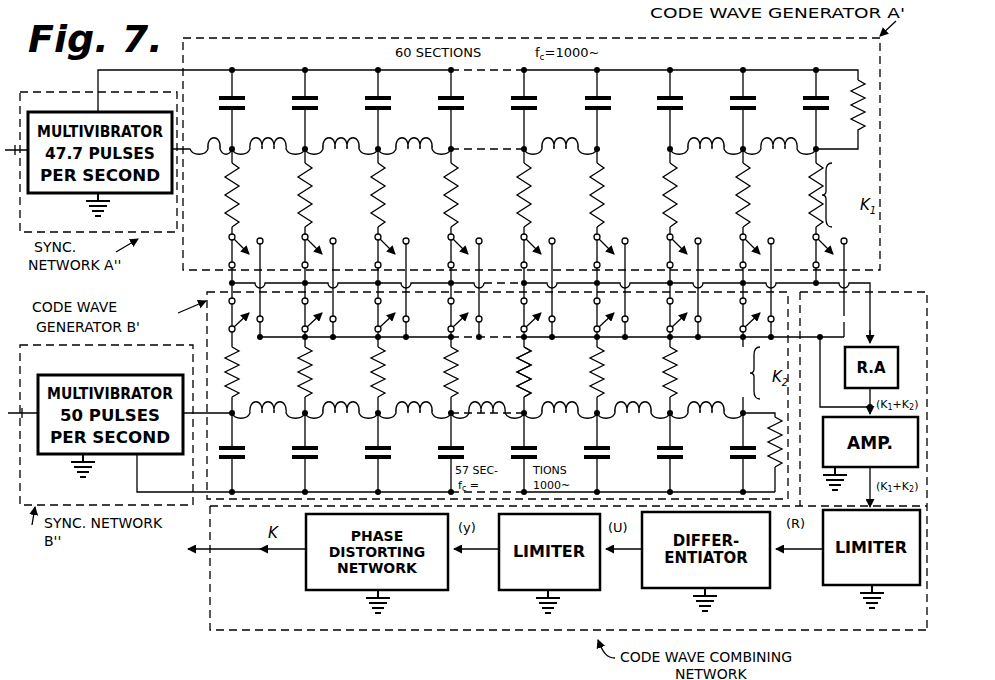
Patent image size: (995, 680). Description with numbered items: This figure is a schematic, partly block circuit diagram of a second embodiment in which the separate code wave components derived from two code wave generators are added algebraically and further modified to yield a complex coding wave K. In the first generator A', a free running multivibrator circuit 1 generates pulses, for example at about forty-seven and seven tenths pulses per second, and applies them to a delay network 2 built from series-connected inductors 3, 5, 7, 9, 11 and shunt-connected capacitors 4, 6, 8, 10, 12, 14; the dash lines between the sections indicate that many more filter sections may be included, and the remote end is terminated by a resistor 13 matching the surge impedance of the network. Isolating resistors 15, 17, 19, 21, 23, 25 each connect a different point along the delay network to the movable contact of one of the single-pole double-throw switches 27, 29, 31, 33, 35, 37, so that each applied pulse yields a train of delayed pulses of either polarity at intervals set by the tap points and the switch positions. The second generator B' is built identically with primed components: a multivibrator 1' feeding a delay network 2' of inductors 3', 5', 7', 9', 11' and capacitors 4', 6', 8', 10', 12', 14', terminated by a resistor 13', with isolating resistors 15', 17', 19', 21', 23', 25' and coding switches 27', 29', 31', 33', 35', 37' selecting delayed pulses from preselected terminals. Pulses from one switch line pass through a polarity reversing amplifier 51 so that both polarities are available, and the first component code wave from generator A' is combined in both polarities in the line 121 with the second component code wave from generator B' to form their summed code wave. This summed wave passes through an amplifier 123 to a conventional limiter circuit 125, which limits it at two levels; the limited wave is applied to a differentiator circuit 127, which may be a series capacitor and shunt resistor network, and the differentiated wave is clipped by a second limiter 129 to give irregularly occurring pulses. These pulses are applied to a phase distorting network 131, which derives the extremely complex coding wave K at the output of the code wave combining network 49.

The free running multivibrator circuit 1 is at (100, 167).
The delay network 2 is at (487, 131).
The inductor 3 is at (268, 137).
The capacitor 4 is at (218, 98).
The inductor 5 is at (341, 137).
The capacitor 6 is at (309, 94).
The inductor 7 is at (414, 134).
The capacitor 8 is at (386, 94).
The inductor 9 is at (706, 134).
The capacitor 10 is at (655, 96).
The inductor 11 is at (779, 134).
The capacitor 12 is at (732, 93).
The terminating resistor 13 is at (840, 97).
The capacitor 14 is at (802, 93).
The isolating resistor 15 is at (249, 195).
The isolating resistor 17 is at (322, 195).
The isolating resistor 19 is at (395, 195).
The isolating resistor 21 is at (686, 195).
The isolating resistor 23 is at (758, 195).
The isolating resistor 25 is at (797, 195).
The single-pole double-throw switch 27 is at (252, 231).
The single-pole double-throw switch 29 is at (325, 231).
The single-pole double-throw switch 31 is at (399, 231).
The single-pole double-throw switch 33 is at (690, 232).
The single-pole double-throw switch 35 is at (745, 248).
The single-pole double-throw switch 37 is at (818, 248).
The multivibrator circuit 1' is at (110, 432).
The delay network 2' is at (531, 421).
The inductor 3' is at (268, 424).
The capacitor 4' is at (239, 469).
The inductor 5' is at (341, 424).
The capacitor 6' is at (313, 469).
The inductor 7' is at (414, 424).
The capacitor 8' is at (386, 469).
The inductor 9' is at (633, 425).
The capacitor 10' is at (583, 445).
The inductor 11' is at (706, 425).
The capacitor 12' is at (652, 471).
The terminating resistor 13' is at (771, 431).
The capacitor 14' is at (727, 471).
The isolating resistor 15' is at (252, 372).
The isolating resistor 17' is at (324, 372).
The isolating resistor 19' is at (396, 372).
The isolating resistor 21' is at (554, 372).
The isolating resistor 23' is at (627, 372).
The isolating resistor 25' is at (700, 372).
The coding switch 27' is at (251, 340).
The coding switch 29' is at (302, 322).
The coding switch 31' is at (376, 322).
The coding switch 33' is at (553, 321).
The coding switch 35' is at (627, 320).
The coding switch 37' is at (701, 320).
The code wave combining network 49 is at (262, 620).
The polarity reversing amplifier 51 is at (888, 348).
The line 121 is at (868, 408).
The amplifier 123 is at (828, 486).
The limiter circuit 125 is at (826, 588).
The differentiator circuit 127 is at (770, 570).
The second limiter 129 is at (598, 588).
The phase distorting network 131 is at (450, 580).